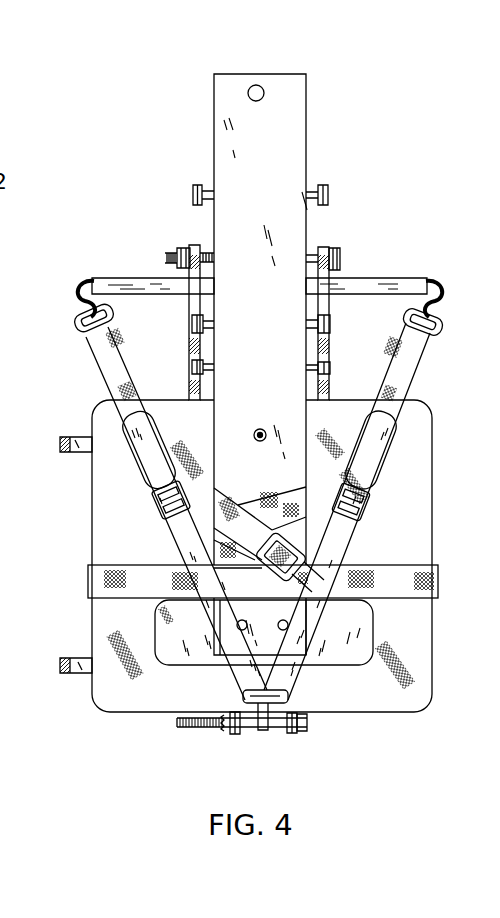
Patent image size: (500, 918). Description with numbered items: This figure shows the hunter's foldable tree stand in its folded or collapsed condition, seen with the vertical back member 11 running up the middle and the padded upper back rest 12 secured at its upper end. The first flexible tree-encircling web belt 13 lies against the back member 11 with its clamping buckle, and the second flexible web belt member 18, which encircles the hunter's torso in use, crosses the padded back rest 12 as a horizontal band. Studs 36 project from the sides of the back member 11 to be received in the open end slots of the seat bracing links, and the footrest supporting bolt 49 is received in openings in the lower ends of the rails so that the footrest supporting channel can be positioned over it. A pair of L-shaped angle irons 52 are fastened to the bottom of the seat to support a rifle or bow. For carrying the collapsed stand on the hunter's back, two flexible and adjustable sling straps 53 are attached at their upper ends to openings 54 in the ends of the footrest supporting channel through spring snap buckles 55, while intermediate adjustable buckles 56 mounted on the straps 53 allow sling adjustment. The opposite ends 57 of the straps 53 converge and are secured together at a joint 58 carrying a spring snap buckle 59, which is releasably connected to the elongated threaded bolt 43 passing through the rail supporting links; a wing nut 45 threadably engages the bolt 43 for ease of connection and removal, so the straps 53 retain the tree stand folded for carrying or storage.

The vertical back member 11 is at (271, 341).
The padded upper back rest 12 is at (200, 657).
The first flexible tree-encircling web belt 13 is at (286, 503).
The second flexible web belt member 18 is at (98, 588).
The stud 36 is at (328, 193).
The elongated threaded bolt 43 is at (178, 722).
The wing nut 45 is at (232, 730).
The footrest supporting bolt 49 is at (172, 257).
The L-shaped angle irons 52 is at (77, 667).
The sling straps 53 is at (122, 386).
The openings 54 is at (121, 252).
The spring snap buckles 55 is at (80, 290).
The intermediate adjustable buckles 56 is at (160, 512).
The opposite ends 57 is at (222, 614).
The joint 58 is at (288, 694).
The spring snap buckle 59 is at (263, 728).